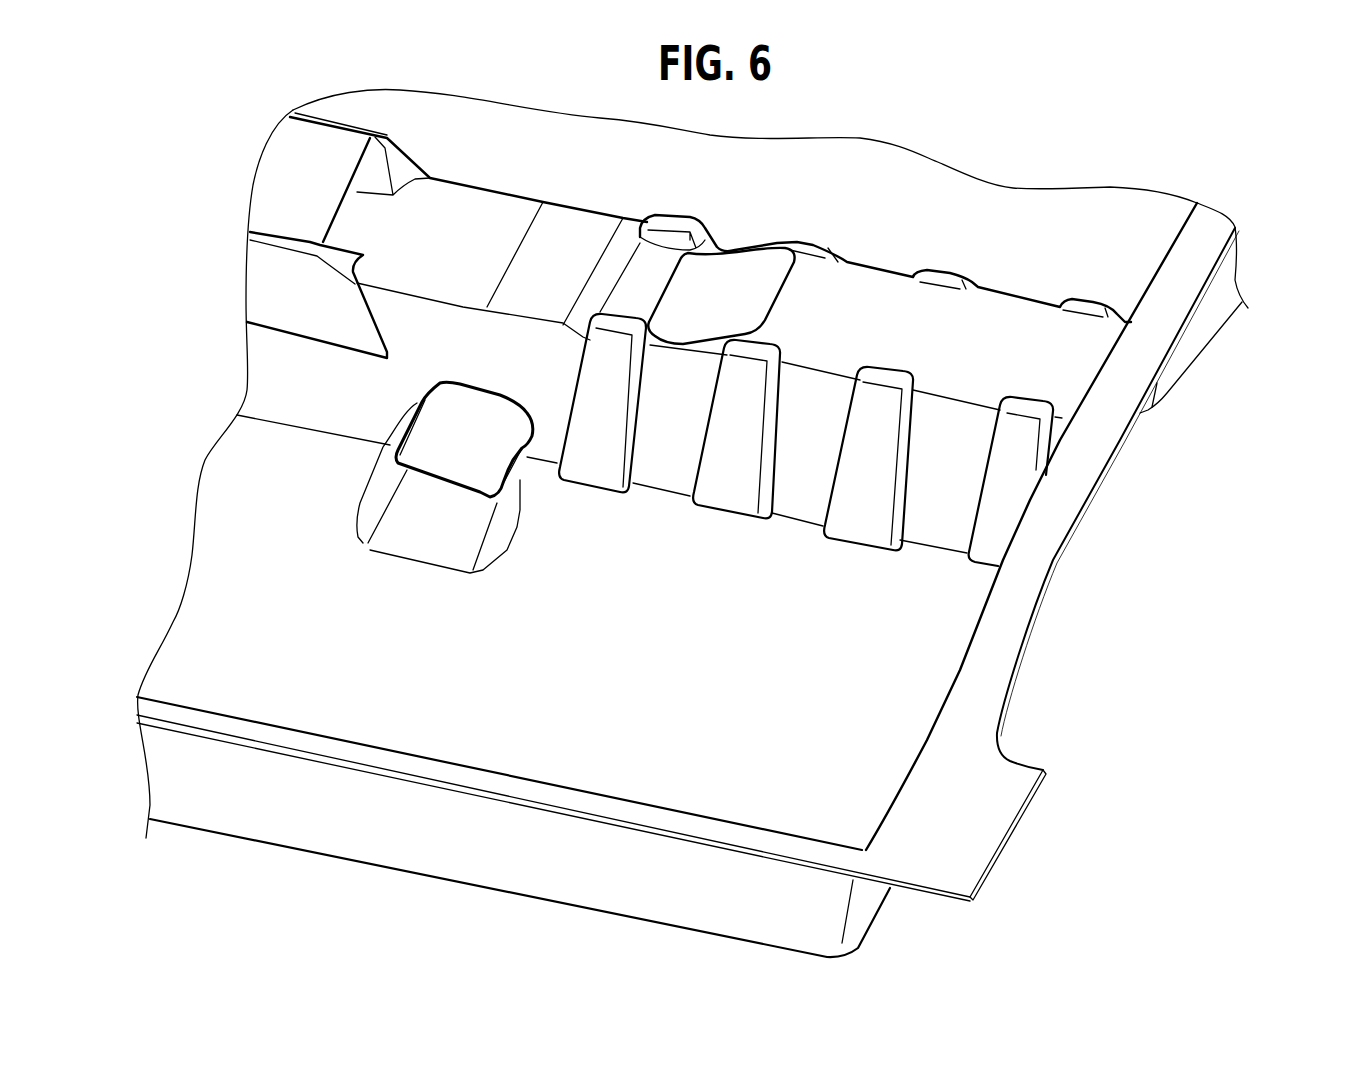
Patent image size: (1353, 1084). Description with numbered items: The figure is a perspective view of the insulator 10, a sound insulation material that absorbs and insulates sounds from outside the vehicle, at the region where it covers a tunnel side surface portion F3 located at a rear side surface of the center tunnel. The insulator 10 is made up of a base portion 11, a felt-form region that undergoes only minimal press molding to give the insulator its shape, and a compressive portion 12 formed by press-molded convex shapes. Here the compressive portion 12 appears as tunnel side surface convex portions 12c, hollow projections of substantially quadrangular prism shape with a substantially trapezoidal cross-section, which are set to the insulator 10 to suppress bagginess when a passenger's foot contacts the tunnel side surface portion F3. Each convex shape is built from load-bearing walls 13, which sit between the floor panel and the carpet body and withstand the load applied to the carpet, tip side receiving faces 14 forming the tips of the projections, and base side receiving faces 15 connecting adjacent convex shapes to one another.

The insulator 10 is at (1068, 155).
The base portion 11 is at (280, 370).
The compressive portion 12 is at (1122, 603).
The tunnel side surface convex portion 12c is at (1148, 397).
The load-bearing wall 13 is at (900, 470).
The tip side receiving face 14 is at (862, 505).
The base side receiving face 15 is at (957, 435).
The tunnel side surface portion F3 is at (217, 187).